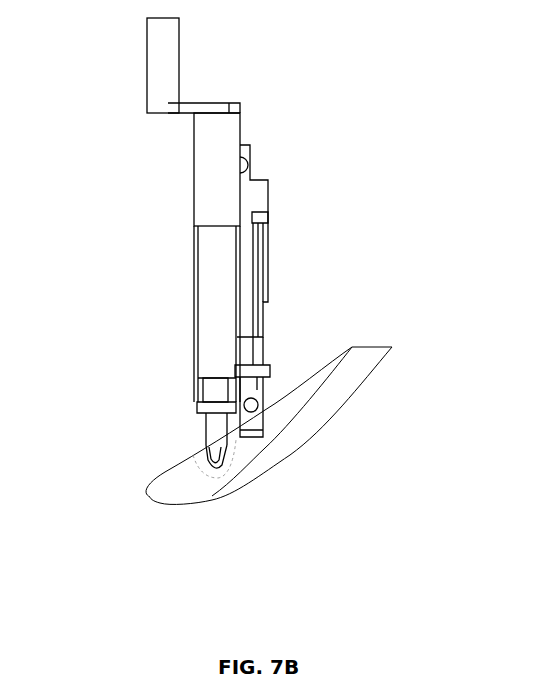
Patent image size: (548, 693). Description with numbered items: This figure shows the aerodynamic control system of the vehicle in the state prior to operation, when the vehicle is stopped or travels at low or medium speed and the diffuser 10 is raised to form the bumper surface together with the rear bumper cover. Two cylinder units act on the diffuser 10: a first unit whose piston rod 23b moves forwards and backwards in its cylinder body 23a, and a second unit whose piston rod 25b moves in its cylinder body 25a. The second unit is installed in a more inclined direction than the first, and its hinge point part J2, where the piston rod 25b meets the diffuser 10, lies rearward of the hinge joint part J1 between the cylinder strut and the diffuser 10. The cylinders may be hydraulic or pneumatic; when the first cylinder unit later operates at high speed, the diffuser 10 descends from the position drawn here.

The cylinder body 23a is at (208, 297).
The piston rod 23b is at (215, 396).
The cylinder body 25a is at (247, 265).
The piston rod 25b is at (253, 348).
The diffuser 10 is at (330, 407).
The hinge joint part J1 is at (216, 463).
The hinge point part J2 is at (257, 406).